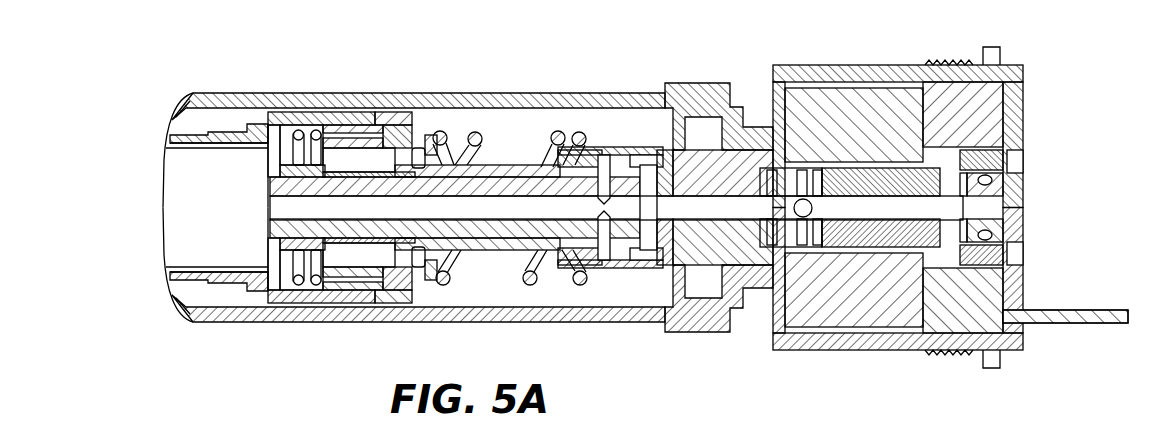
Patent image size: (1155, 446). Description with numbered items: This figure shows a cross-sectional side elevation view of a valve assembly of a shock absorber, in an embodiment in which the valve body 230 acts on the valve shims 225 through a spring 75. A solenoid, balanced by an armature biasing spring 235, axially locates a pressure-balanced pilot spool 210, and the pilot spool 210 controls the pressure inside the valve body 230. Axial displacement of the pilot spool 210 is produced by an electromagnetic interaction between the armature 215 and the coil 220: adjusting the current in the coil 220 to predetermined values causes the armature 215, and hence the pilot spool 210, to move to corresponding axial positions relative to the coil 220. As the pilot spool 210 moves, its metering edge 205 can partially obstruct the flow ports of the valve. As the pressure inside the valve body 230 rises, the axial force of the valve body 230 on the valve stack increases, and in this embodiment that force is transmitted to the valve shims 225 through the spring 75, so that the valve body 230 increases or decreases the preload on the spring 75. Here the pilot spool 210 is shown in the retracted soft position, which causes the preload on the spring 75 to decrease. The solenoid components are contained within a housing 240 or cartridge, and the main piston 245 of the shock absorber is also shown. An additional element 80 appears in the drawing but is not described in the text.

The spring 75 is at (494, 112).
The seal ring 80 is at (417, 282).
The metering edge 205 is at (647, 229).
The pilot spool 210 is at (795, 252).
The armature 215 is at (1016, 100).
The coil 220 is at (834, 87).
The valve shims 225 is at (417, 108).
The valve body 230 is at (603, 140).
The armature biasing spring 235 is at (789, 166).
The housing 240 is at (694, 260).
The main piston 245 is at (396, 108).